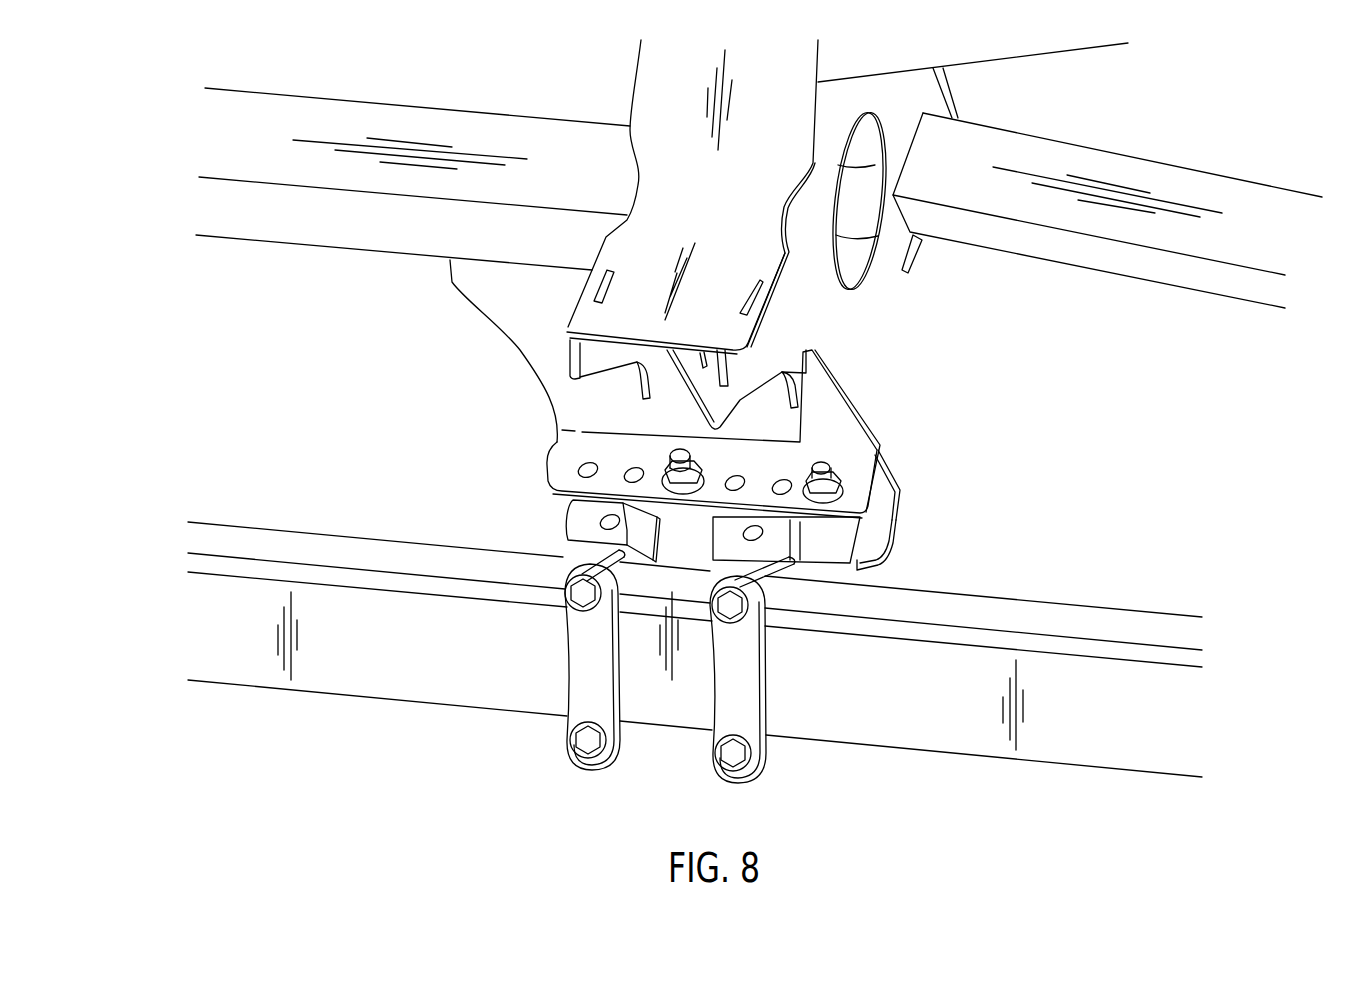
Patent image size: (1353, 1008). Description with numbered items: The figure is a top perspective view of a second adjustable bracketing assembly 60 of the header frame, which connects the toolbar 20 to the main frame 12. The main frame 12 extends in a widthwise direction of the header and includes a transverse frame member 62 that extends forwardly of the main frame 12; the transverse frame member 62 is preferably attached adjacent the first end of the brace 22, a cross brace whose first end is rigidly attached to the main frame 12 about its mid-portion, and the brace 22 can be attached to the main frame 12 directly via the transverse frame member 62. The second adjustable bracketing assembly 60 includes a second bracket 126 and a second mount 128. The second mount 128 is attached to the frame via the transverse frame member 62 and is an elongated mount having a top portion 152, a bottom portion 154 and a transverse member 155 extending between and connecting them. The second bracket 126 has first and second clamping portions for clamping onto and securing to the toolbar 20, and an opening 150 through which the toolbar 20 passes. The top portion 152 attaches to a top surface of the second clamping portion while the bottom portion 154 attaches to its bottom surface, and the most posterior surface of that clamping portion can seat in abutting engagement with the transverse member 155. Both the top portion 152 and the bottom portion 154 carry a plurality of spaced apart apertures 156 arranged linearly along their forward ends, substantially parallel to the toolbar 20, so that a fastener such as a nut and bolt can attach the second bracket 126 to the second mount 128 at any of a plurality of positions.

The main frame 12 is at (430, 107).
The toolbar 20 is at (1135, 610).
The brace 22 is at (1192, 167).
The second adjustable bracketing assembly 60 is at (418, 456).
The transverse frame member 62 is at (880, 334).
The second bracket 126 is at (704, 773).
The second mount 128 is at (918, 480).
The opening 150 is at (858, 580).
The top portion 152 is at (880, 453).
The bottom portion 154 is at (890, 547).
The transverse member 155 is at (895, 492).
The apertures 156 is at (580, 464).